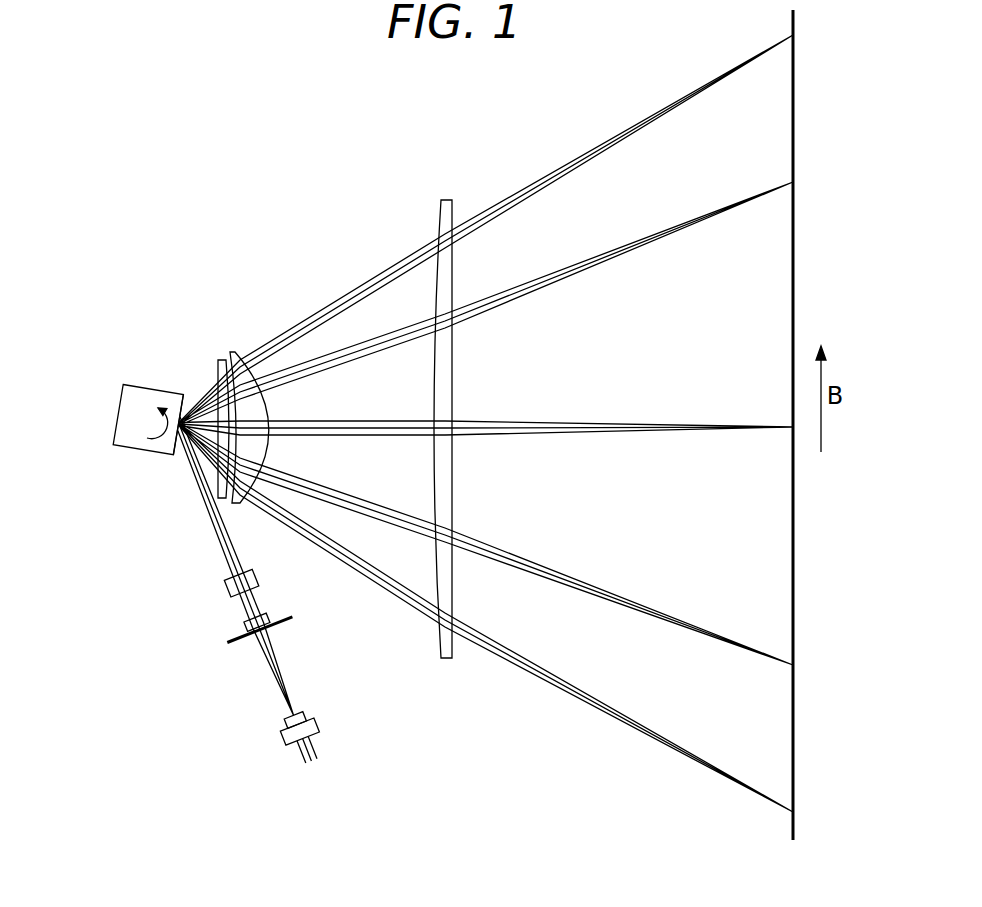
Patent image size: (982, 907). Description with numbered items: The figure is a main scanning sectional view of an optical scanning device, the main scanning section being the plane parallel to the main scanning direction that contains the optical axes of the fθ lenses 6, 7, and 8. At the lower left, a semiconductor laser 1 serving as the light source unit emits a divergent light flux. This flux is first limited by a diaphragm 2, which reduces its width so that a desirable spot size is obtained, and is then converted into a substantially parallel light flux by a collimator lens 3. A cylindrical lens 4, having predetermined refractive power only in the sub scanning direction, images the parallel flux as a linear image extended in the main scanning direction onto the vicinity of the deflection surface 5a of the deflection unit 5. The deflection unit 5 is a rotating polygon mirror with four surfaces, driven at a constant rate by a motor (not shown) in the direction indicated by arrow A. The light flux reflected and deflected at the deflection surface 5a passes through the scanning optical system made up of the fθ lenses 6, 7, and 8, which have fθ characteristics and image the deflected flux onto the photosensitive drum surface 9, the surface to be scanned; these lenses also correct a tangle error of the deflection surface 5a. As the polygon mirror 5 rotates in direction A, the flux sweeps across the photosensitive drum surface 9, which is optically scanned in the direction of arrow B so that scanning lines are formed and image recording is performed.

The semiconductor laser 1 is at (288, 740).
The diaphragm 2 is at (235, 643).
The collimator lens 3 is at (267, 617).
The cylindrical lens 4 is at (226, 588).
The deflection unit 5 is at (117, 418).
The deflection surface 5a is at (189, 396).
The fθ lens 6 is at (222, 358).
The fθ lens 7 is at (231, 352).
The fθ lens 8 is at (441, 198).
The photosensitive drum surface 9 is at (795, 75).